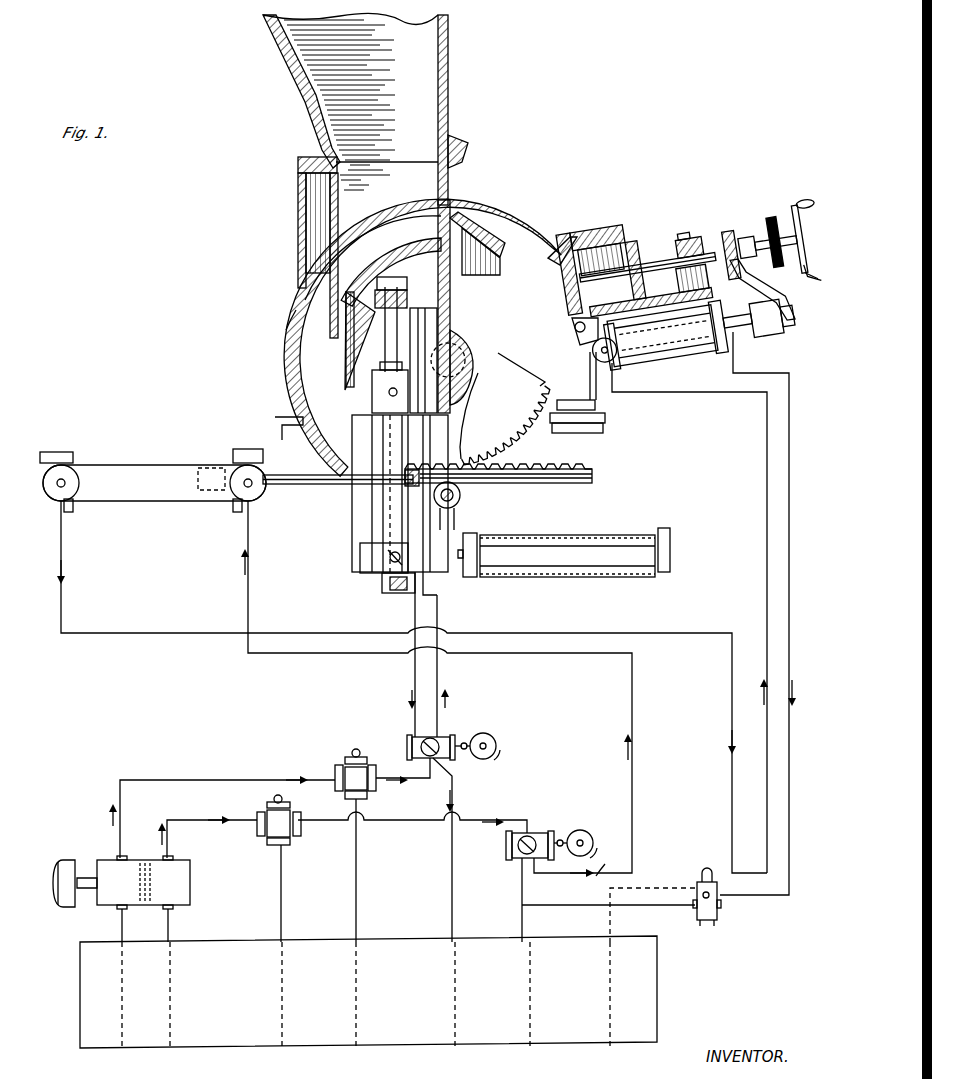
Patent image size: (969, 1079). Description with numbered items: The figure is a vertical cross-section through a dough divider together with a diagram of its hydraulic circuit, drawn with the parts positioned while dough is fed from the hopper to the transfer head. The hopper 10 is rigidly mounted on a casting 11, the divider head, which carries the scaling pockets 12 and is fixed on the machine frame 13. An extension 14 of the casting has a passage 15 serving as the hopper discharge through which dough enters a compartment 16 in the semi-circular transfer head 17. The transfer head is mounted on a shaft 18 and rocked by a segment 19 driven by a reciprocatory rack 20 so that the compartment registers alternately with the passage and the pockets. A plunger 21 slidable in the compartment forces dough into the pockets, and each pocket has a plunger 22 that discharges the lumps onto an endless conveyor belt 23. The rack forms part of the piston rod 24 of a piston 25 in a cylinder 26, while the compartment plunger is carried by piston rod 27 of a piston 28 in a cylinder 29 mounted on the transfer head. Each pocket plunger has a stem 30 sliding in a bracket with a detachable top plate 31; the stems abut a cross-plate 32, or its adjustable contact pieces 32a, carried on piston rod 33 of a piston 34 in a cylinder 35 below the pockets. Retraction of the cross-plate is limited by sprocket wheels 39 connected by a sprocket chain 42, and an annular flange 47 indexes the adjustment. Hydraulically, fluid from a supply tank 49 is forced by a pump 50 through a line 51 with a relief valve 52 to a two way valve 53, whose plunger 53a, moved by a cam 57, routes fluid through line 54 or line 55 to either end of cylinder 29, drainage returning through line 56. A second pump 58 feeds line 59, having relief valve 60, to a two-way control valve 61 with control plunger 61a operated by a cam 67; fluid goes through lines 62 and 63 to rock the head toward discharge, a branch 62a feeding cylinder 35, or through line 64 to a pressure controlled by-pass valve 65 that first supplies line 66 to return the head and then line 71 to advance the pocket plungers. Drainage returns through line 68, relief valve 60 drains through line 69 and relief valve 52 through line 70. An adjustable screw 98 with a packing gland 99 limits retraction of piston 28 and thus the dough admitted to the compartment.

The hopper 10 is at (428, 92).
The casting 11 is at (505, 222).
The scaling pockets 12 is at (575, 238).
The frame 13 is at (600, 428).
The extension 14 is at (300, 194).
The passage 15 is at (355, 212).
The compartment 16 is at (345, 258).
The transfer head 17 is at (293, 340).
The shaft 18 is at (452, 348).
The segment 19 is at (505, 409).
The rack 20 is at (498, 483).
The plunger 21 is at (418, 252).
The plunger 22 is at (603, 232).
The conveyor belt 23 is at (590, 538).
The piston rod 24 is at (290, 485).
The piston 25 is at (200, 468).
The cylinder 26 is at (128, 464).
The piston rod 27 is at (390, 336).
The piston 28 is at (373, 492).
The cylinder 29 is at (377, 525).
The stem 30 is at (645, 270).
The top plate 31 is at (697, 240).
The cross-plate 32 is at (745, 240).
The contact pieces 32a is at (752, 238).
The piston rod 33 is at (797, 330).
The piston 34 is at (618, 362).
The cylinder 35 is at (682, 360).
The sprocket wheel 39 is at (786, 220).
The sprocket chain 42 is at (770, 222).
The annular flange 47 is at (809, 281).
The supply tank 49 is at (248, 1040).
The pump 50 is at (108, 860).
The line 51 is at (206, 782).
The relief valve 52 is at (345, 770).
The two way valve 53 is at (420, 735).
The plunger 53a is at (462, 740).
The line 54 is at (415, 610).
The line 55 is at (382, 585).
The line 56 is at (452, 897).
The cam 57 is at (494, 736).
The pump 58 is at (192, 890).
The line 59 is at (200, 818).
The relief valve 60 is at (288, 830).
The two-way control valve 61 is at (530, 830).
The control plunger 61a is at (556, 838).
The line 62 is at (594, 866).
The branch 62a is at (767, 610).
The line 63 is at (244, 592).
The line 64 is at (522, 878).
The pressure controlled by-pass valve 65 is at (707, 926).
The line 66 is at (70, 598).
The cam 67 is at (590, 832).
The line 68 is at (522, 918).
The line 69 is at (282, 915).
The line 70 is at (357, 918).
The line 71 is at (790, 833).
The screw 98 is at (390, 595).
The packing gland 99 is at (375, 565).